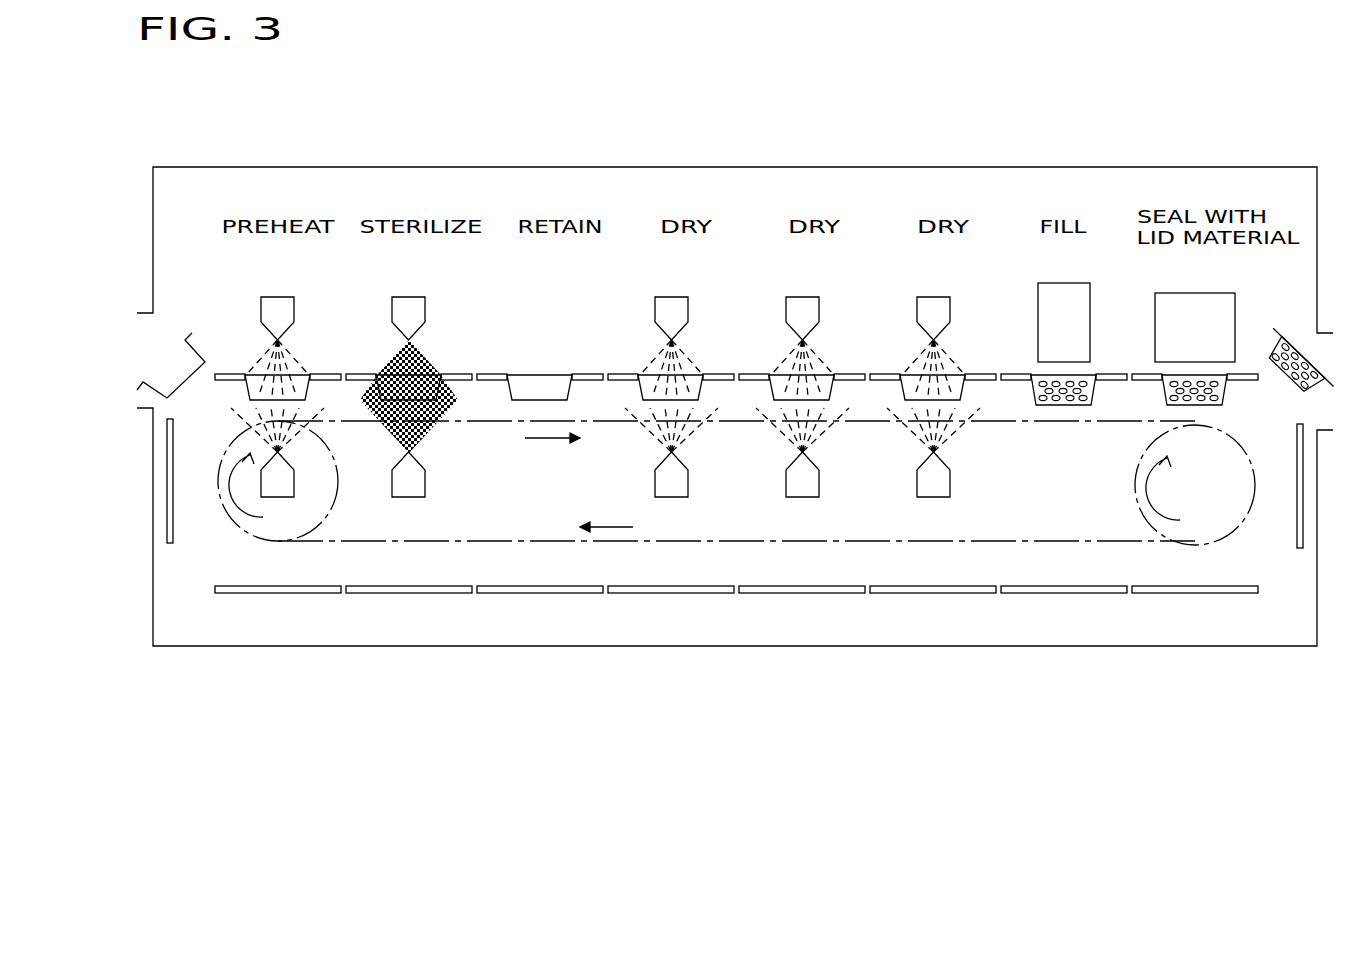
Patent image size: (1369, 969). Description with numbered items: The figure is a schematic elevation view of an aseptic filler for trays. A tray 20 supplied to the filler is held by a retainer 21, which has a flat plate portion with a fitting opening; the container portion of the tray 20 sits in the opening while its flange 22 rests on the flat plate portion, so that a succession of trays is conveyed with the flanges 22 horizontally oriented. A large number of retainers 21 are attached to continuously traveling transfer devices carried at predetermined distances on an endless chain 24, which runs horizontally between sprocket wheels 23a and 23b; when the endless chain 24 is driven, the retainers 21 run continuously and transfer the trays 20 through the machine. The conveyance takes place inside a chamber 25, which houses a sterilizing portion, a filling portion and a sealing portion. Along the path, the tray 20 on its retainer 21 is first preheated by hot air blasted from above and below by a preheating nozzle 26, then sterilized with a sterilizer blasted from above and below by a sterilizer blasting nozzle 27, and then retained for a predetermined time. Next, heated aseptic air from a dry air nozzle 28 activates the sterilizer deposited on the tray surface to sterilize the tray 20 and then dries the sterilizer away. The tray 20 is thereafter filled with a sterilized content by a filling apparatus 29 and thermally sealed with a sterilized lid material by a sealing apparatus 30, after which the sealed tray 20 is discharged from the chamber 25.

The tray 20 is at (191, 311).
The retainer 21 is at (343, 358).
The flange 22 is at (245, 372).
The sprocket wheel 23a is at (227, 515).
The sprocket wheel 23b is at (1245, 518).
The endless chain 24 is at (563, 545).
The chamber 25 is at (645, 166).
The preheating nozzle 26 is at (280, 306).
The sterilizer blasting nozzle 27 is at (412, 306).
The dry air nozzle 28 is at (676, 306).
The filling apparatus 29 is at (1058, 298).
The sealing apparatus 30 is at (1194, 301).